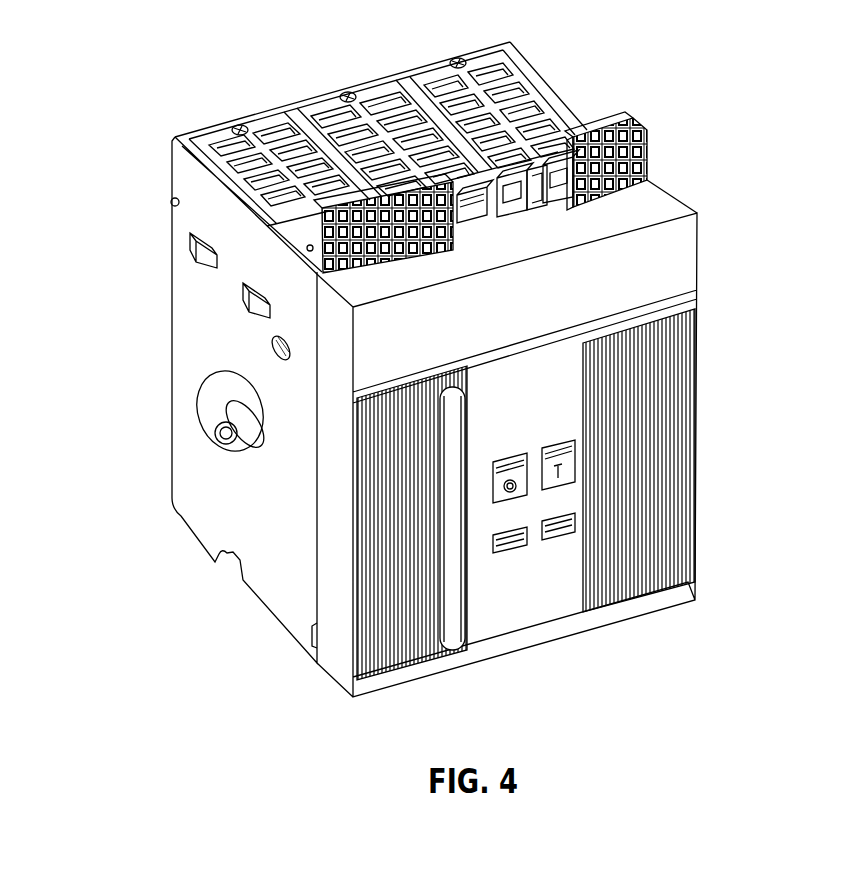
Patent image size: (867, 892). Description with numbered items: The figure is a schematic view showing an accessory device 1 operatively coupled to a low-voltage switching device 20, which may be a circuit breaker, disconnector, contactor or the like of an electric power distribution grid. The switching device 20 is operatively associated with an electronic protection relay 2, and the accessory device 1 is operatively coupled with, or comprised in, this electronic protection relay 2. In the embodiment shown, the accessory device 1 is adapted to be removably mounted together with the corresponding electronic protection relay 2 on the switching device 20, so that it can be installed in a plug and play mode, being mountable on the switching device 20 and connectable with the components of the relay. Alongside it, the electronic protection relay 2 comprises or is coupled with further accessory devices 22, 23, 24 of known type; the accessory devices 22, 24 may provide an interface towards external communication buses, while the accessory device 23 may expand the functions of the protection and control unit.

The electronic protection relay 2 is at (680, 265).
The switching device 20 is at (137, 135).
The accessory device 22 is at (473, 221).
The accessory device 1 is at (507, 209).
The accessory device 24 is at (537, 209).
The accessory device 23 is at (567, 199).